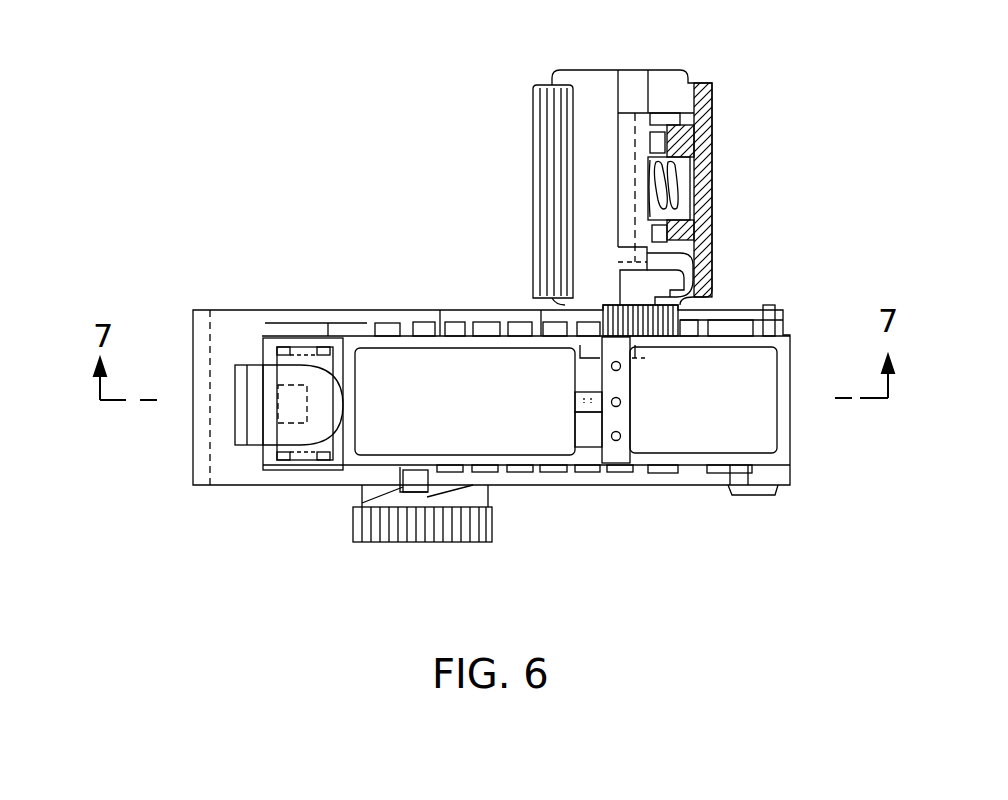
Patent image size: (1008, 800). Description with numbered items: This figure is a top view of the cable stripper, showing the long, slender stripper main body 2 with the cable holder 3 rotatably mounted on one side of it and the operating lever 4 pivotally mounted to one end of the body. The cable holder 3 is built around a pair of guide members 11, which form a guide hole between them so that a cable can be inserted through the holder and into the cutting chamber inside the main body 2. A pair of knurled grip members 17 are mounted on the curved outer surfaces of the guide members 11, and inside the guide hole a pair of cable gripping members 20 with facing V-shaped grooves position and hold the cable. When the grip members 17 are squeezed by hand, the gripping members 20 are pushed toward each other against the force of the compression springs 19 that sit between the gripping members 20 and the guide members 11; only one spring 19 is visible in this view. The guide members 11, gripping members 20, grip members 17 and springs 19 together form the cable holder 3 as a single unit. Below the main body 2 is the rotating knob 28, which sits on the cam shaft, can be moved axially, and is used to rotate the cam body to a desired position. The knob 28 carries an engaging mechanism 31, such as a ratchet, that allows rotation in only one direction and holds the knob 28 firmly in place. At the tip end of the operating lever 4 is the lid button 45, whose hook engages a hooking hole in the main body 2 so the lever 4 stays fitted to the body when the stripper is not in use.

The stripper main body 2 is at (243, 318).
The cable holder 3 is at (530, 62).
The operating lever 4 is at (270, 460).
The guide members 11 is at (668, 78).
The knurled grip members 17 is at (532, 133).
The spring 19 is at (683, 183).
The cable gripping members 20 is at (677, 225).
The rotating knob 28 is at (490, 520).
The engaging mechanism 31 is at (477, 495).
The lid button 45 is at (235, 370).